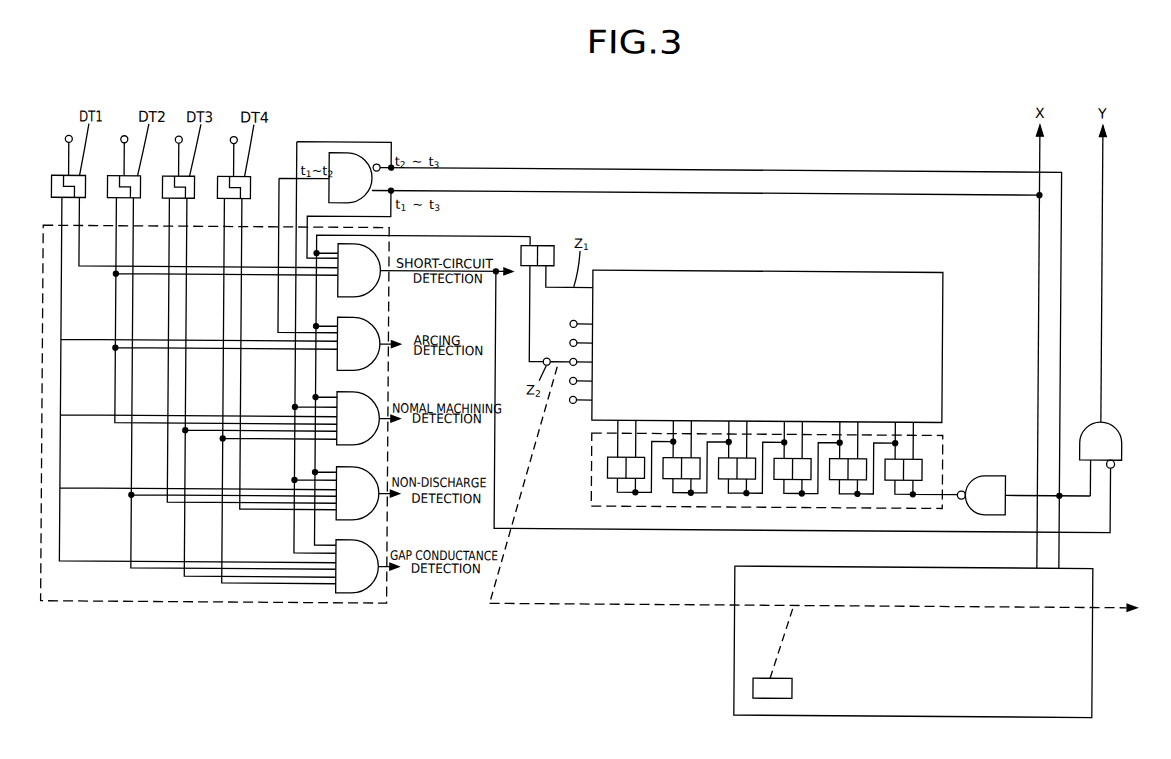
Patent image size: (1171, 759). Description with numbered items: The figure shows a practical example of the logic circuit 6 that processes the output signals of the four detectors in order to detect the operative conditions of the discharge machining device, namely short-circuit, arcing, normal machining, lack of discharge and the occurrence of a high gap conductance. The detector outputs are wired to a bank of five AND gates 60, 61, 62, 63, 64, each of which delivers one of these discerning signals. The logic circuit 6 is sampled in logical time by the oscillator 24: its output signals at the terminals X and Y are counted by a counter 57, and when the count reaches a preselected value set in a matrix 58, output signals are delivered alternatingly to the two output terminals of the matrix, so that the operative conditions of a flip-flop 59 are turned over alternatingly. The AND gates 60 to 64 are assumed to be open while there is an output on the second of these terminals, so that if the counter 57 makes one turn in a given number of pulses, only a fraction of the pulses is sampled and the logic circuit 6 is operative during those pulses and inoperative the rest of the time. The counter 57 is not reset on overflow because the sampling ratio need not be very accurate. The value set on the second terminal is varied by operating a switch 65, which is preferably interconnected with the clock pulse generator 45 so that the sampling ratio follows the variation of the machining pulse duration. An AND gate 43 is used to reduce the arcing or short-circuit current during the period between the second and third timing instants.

The logic circuit 6 is at (262, 604).
The oscillator 24 is at (736, 644).
The AND gate 43 is at (1103, 432).
The clock pulse generator 45 is at (797, 685).
The counter 57 is at (590, 478).
The matrix 58 is at (773, 358).
The flip-flop 59 is at (547, 245).
The AND gate 60 is at (365, 280).
The AND gate 61 is at (365, 354).
The AND gate 62 is at (365, 428).
The AND gate 63 is at (365, 503).
The AND gate 64 is at (365, 576).
The switch 65 is at (556, 360).